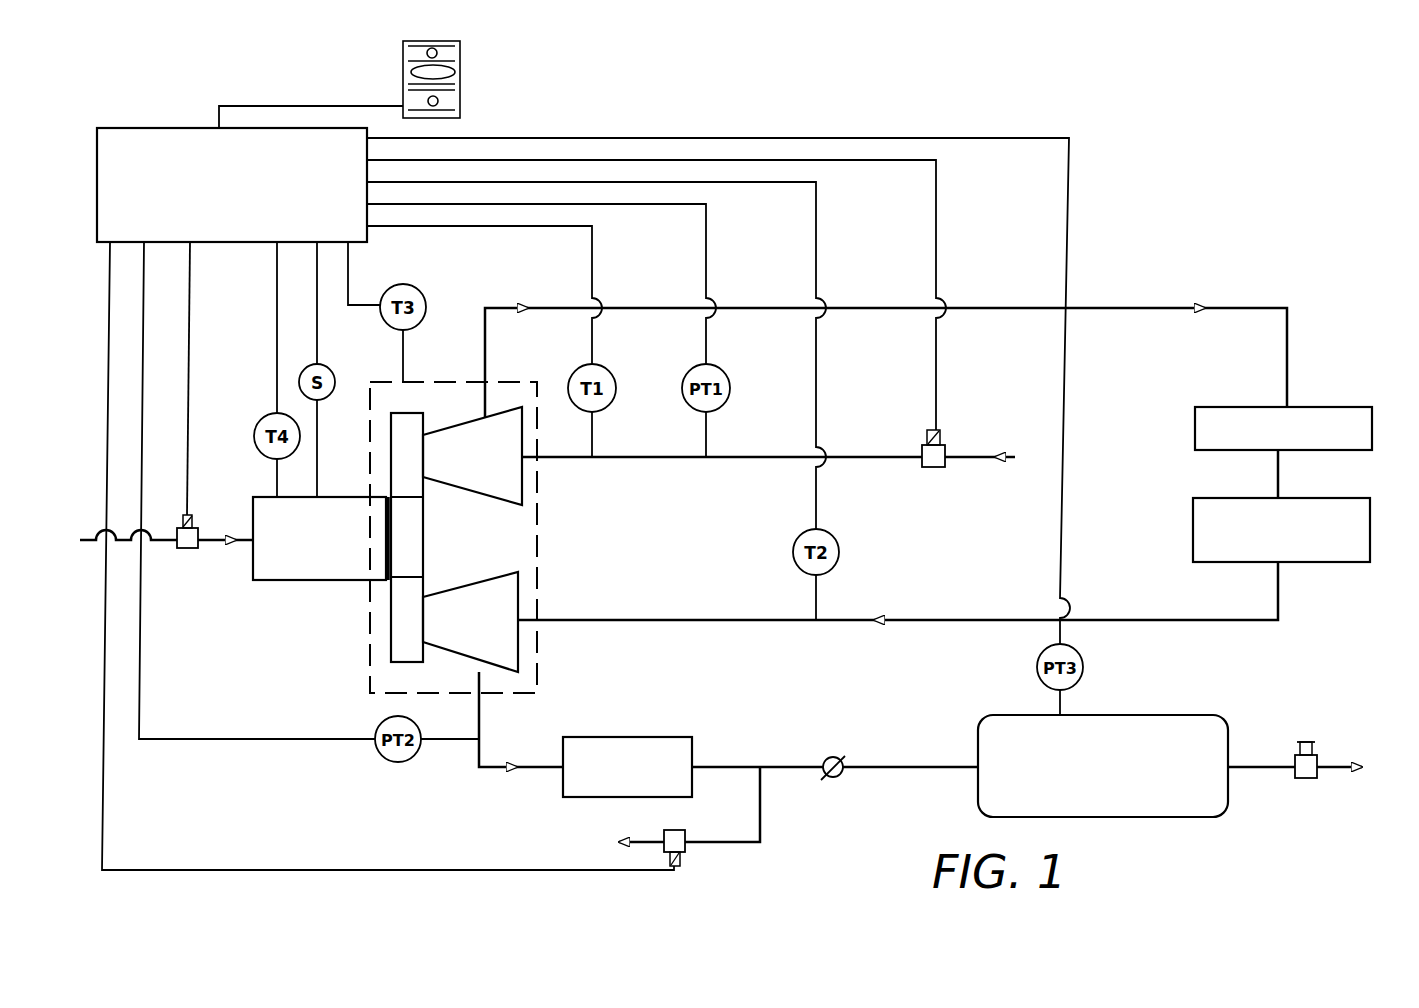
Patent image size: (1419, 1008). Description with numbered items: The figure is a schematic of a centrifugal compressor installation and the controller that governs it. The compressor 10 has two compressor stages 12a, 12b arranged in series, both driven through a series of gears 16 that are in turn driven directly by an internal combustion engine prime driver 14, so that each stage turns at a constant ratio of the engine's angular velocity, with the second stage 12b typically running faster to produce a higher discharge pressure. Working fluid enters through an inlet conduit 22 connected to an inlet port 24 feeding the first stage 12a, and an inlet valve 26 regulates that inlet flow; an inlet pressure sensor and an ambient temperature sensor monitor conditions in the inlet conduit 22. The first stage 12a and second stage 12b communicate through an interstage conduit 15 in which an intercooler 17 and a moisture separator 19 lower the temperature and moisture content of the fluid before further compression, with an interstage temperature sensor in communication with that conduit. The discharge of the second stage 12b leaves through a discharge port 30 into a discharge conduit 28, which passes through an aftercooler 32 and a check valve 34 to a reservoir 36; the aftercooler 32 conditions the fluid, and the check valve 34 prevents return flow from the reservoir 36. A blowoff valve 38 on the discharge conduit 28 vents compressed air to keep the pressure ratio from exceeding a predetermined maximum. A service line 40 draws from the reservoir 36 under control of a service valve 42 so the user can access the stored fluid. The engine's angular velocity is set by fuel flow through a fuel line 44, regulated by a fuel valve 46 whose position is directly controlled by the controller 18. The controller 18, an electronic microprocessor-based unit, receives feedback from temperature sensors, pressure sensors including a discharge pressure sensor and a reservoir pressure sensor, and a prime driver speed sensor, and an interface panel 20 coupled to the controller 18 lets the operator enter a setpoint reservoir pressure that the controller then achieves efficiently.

The compressor 10 is at (537, 528).
The first compressor stage 12a is at (507, 497).
The second compressor stage 12b is at (510, 592).
The internal combustion engine prime driver 14 is at (318, 575).
The interstage conduit 15 is at (1182, 308).
The gears 16 is at (405, 422).
The intercooler 17 is at (1222, 407).
The controller 18 is at (160, 133).
The moisture separator 19 is at (1302, 562).
The interface panel 20 is at (463, 82).
The inlet conduit 22 is at (1002, 462).
The inlet port 24 is at (522, 457).
The inlet valve 26 is at (930, 455).
The discharge conduit 28 is at (488, 768).
The discharge port 30 is at (484, 690).
The aftercooler 32 is at (657, 737).
The check valve 34 is at (840, 758).
The reservoir 36 is at (1143, 717).
The blowoff valve 38 is at (685, 845).
The service line 40 is at (1248, 767).
The service valve 42 is at (1296, 760).
The fuel line 44 is at (162, 550).
The fuel valve 46 is at (192, 527).